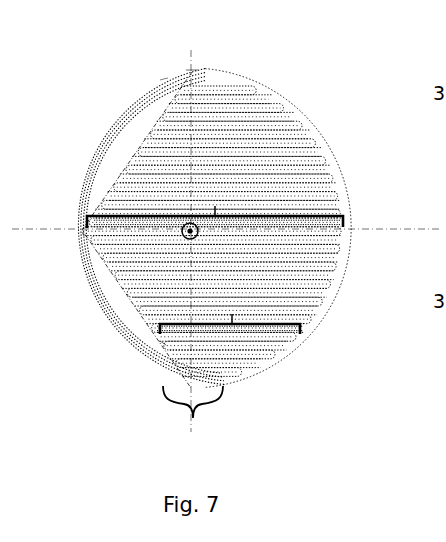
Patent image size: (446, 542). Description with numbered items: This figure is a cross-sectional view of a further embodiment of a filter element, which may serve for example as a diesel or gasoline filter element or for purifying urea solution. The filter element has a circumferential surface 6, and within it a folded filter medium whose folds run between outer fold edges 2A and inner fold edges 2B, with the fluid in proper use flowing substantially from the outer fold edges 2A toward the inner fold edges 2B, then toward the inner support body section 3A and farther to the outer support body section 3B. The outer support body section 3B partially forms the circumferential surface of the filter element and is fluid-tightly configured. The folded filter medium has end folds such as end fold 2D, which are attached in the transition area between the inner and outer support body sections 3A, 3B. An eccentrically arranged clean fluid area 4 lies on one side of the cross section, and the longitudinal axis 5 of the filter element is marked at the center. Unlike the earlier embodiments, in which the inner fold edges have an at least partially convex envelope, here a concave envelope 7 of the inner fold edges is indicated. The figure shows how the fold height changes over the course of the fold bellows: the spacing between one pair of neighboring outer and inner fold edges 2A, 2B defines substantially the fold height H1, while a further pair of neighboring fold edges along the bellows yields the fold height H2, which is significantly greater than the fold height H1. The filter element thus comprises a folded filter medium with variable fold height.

The outer fold edge 2A is at (300, 334).
The inner fold edge 2B is at (163, 343).
The end fold 2D is at (192, 70).
The inner support body section 3A is at (158, 117).
The outer support body section 3B is at (83, 125).
The clean fluid area 4 is at (113, 151).
The longitudinal axis 5 is at (187, 233).
The circumferential surface 6 is at (193, 416).
The concave envelope 7 is at (111, 188).
The fold height H1 is at (229, 305).
The fold height H2 is at (216, 198).